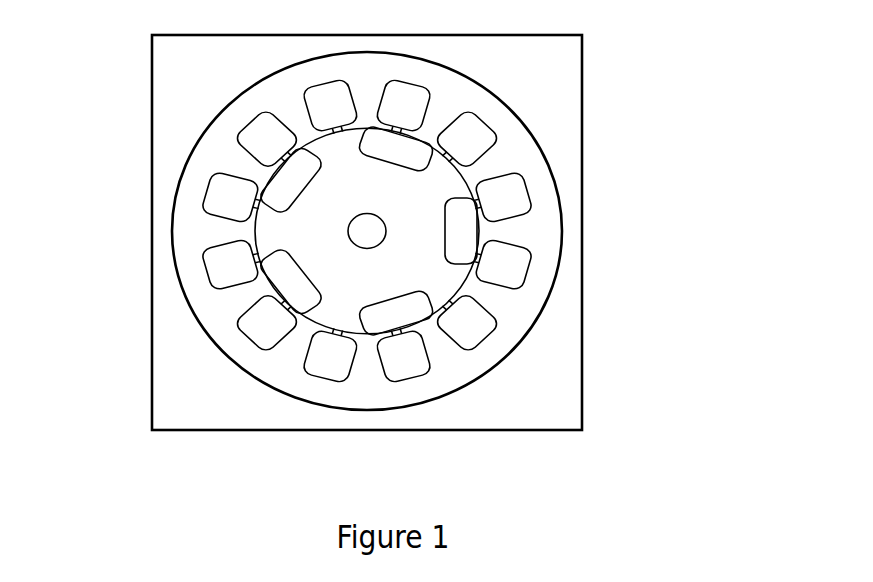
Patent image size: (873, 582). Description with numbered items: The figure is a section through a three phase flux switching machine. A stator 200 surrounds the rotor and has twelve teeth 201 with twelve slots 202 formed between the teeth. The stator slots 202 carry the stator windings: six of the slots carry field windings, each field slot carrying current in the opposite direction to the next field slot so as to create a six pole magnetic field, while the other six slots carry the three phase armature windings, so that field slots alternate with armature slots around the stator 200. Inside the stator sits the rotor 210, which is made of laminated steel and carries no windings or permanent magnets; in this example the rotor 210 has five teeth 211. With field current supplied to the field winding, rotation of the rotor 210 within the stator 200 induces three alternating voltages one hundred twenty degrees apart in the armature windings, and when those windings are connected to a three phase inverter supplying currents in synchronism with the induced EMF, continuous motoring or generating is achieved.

The stator 200 is at (500, 106).
The teeth 201 is at (496, 169).
The slots 202 is at (534, 192).
The rotor 210 is at (344, 280).
The teeth 211 is at (268, 229).